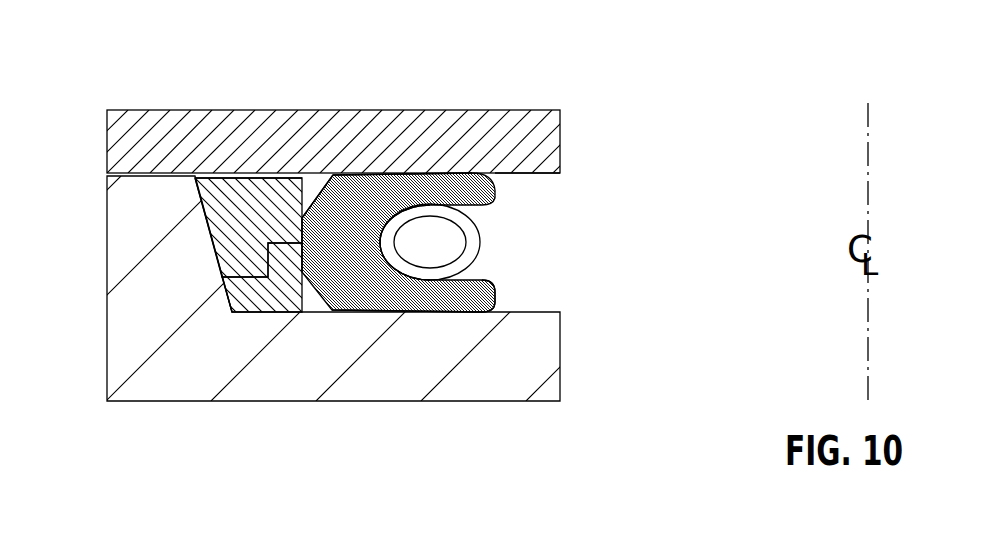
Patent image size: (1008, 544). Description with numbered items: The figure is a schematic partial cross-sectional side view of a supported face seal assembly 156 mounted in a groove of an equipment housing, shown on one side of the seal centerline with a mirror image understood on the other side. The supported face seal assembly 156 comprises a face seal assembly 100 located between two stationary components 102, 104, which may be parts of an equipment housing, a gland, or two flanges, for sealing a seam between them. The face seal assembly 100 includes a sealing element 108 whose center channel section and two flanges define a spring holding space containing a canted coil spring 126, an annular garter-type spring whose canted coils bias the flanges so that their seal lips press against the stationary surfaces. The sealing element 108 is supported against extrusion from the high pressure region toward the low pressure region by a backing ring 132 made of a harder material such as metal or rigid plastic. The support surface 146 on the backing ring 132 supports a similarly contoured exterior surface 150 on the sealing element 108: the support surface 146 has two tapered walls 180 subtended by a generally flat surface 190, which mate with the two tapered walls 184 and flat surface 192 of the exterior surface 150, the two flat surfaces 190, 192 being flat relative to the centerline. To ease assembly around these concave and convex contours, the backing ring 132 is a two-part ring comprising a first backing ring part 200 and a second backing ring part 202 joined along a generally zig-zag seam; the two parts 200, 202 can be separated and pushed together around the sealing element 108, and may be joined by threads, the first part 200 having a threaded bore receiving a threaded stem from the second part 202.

The face seal assembly 100 is at (520, 277).
The stationary component 102 is at (553, 130).
The stationary component 104 is at (555, 369).
The sealing element 108 is at (402, 183).
The canted coil spring 126 is at (490, 240).
The backing ring 132 is at (214, 278).
The support surface 146 is at (302, 208).
The exterior surface 150 is at (302, 262).
The supported face seal assembly 156 is at (548, 198).
The tapered walls 180 is at (310, 193).
The tapered walls 184 is at (363, 187).
The flat surface 190 is at (302, 223).
The flat surface 192 is at (330, 252).
The first backing ring part 200 is at (240, 186).
The second backing ring part 202 is at (262, 295).